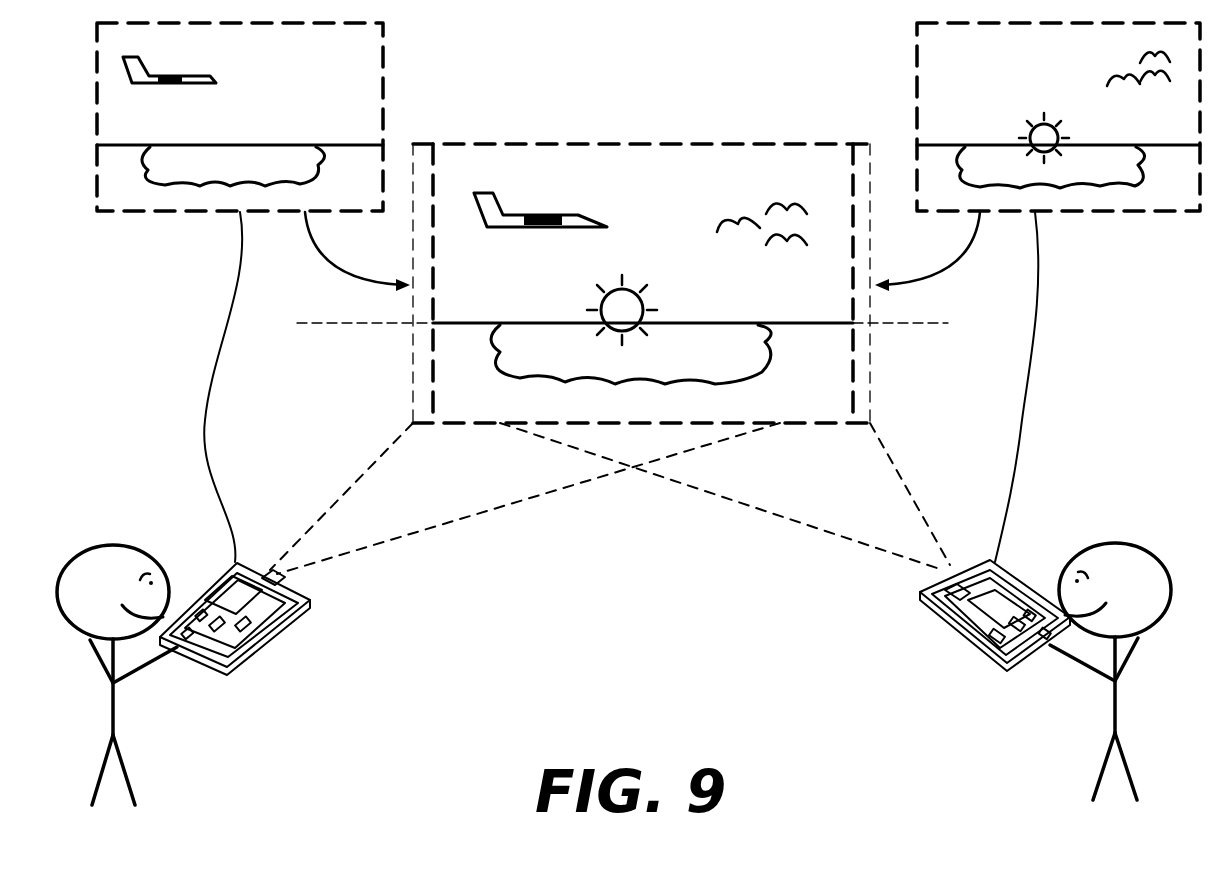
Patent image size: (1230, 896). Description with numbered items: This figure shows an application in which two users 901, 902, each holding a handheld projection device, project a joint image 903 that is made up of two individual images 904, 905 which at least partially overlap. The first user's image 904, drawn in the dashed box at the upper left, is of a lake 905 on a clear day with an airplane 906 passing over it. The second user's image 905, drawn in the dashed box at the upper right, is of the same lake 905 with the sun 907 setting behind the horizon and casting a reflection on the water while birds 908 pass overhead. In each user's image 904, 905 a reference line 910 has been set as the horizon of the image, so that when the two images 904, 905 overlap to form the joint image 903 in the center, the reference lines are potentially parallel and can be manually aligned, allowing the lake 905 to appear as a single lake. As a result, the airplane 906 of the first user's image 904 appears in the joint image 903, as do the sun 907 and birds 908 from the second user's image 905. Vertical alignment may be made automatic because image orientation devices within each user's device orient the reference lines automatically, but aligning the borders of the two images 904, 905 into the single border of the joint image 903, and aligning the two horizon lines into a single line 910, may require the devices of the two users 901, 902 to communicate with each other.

The first user 901 is at (120, 703).
The second user 902 is at (1115, 695).
The joint image 903 is at (641, 260).
The first user's image 904 is at (385, 86).
The lake / second user's image 905 is at (227, 175).
The airplane 906 is at (157, 74).
The sun 907 is at (650, 303).
The birds 908 is at (723, 228).
The reference line 910 is at (310, 323).